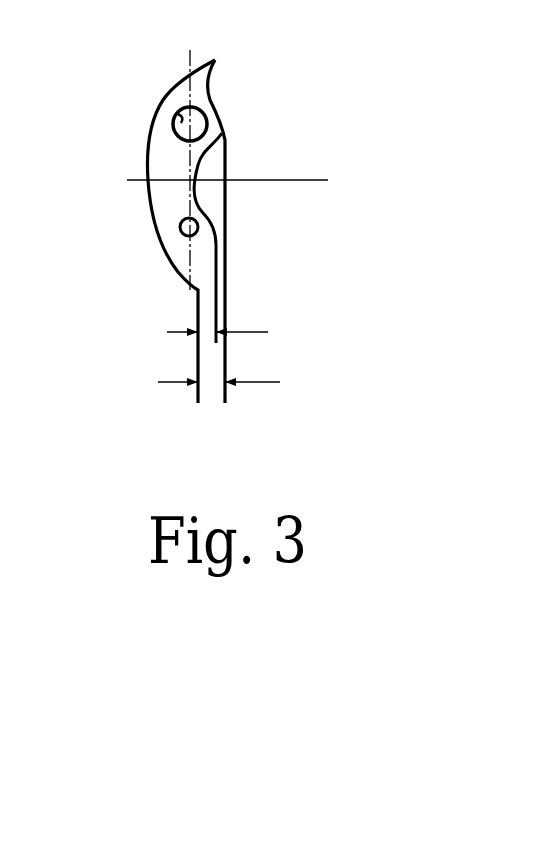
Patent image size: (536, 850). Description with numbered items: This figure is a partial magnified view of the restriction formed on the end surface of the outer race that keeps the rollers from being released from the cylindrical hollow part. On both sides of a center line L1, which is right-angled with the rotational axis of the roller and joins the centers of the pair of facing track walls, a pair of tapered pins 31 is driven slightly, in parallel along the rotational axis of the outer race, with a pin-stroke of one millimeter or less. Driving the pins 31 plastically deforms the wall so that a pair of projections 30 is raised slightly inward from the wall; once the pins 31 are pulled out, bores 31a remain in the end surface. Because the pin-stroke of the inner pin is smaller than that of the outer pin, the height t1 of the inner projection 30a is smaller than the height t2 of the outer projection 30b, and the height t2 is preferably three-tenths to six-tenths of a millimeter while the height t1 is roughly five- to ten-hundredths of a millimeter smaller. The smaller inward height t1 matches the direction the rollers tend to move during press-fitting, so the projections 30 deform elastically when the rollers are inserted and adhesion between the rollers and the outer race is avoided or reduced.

The projections 30 is at (290, 226).
The inner projection 30a is at (358, 103).
The outer projection 30b is at (217, 116).
The pins 31 is at (173, 133).
The bores 31a is at (188, 110).
The center line L1 is at (199, 178).
The height of inner projection t1 is at (233, 333).
The height of outer projection t2 is at (234, 385).